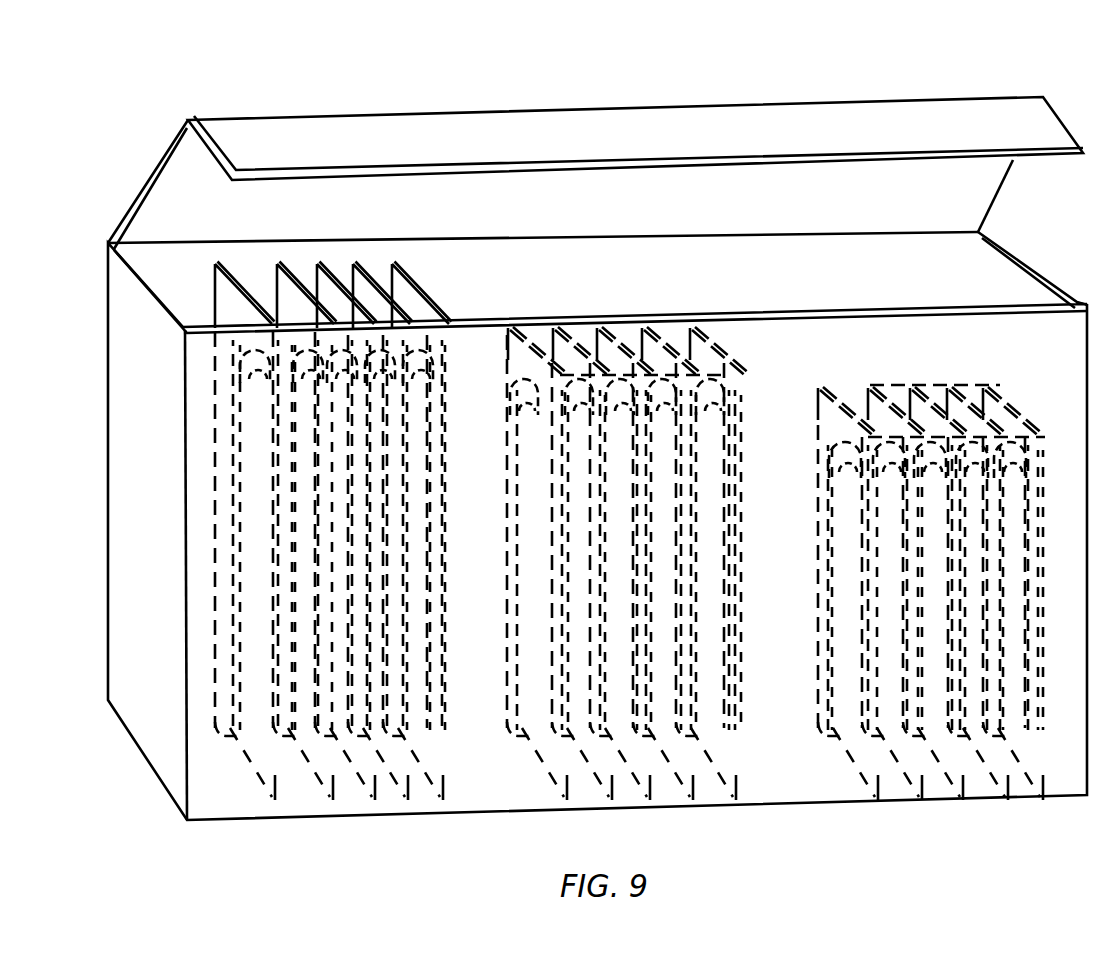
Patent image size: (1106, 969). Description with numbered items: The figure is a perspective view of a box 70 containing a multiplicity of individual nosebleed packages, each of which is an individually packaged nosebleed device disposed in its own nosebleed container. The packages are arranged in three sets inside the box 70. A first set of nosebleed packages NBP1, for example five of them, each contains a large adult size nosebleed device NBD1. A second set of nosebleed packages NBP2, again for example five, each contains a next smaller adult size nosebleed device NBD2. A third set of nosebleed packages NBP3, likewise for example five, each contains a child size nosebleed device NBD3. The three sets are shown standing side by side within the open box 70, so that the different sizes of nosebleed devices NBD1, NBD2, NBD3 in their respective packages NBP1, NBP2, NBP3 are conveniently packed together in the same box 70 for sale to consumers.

The box 70 is at (302, 62).
The first set of nosebleed packages NBP1 is at (223, 720).
The large adult size nosebleed device NBD1 is at (277, 713).
The second set of nosebleed packages NBP2 is at (512, 720).
The next smaller adult size nosebleed device NBD2 is at (545, 710).
The third set of nosebleed packages NBP3 is at (827, 727).
The child size nosebleed device NBD3 is at (850, 722).